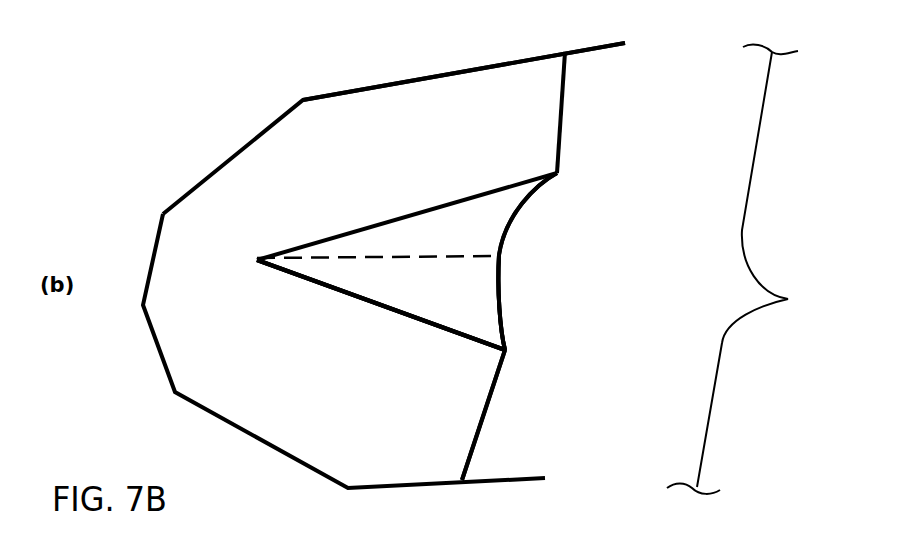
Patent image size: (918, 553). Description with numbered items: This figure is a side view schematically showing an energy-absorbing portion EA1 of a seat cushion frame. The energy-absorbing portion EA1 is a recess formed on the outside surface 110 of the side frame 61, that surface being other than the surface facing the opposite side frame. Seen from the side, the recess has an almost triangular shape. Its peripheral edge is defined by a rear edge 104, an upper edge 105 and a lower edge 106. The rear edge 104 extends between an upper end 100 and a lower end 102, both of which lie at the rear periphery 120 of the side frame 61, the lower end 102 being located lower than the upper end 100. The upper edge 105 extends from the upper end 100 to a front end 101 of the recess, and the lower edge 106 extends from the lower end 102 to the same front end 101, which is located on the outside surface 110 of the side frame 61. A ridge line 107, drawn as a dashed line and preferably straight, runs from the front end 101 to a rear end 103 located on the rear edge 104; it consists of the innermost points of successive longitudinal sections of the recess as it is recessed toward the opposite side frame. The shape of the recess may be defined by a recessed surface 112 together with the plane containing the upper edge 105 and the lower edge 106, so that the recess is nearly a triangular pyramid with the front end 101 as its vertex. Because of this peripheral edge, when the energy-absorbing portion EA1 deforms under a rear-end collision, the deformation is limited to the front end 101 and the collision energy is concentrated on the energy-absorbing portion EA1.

The energy-absorbing portion EA1 is at (228, 148).
The side frame 61 is at (597, 148).
The upper end 100 is at (560, 172).
The front end 101 is at (258, 260).
The lower end 102 is at (505, 350).
The rear end 103 is at (500, 253).
The rear edge 104 is at (502, 310).
The upper edge 105 is at (508, 183).
The lower edge 106 is at (417, 322).
The ridge line 107 is at (415, 257).
The surface 110 is at (228, 198).
The recessed surface 112 is at (357, 282).
The rear periphery 120 is at (753, 269).